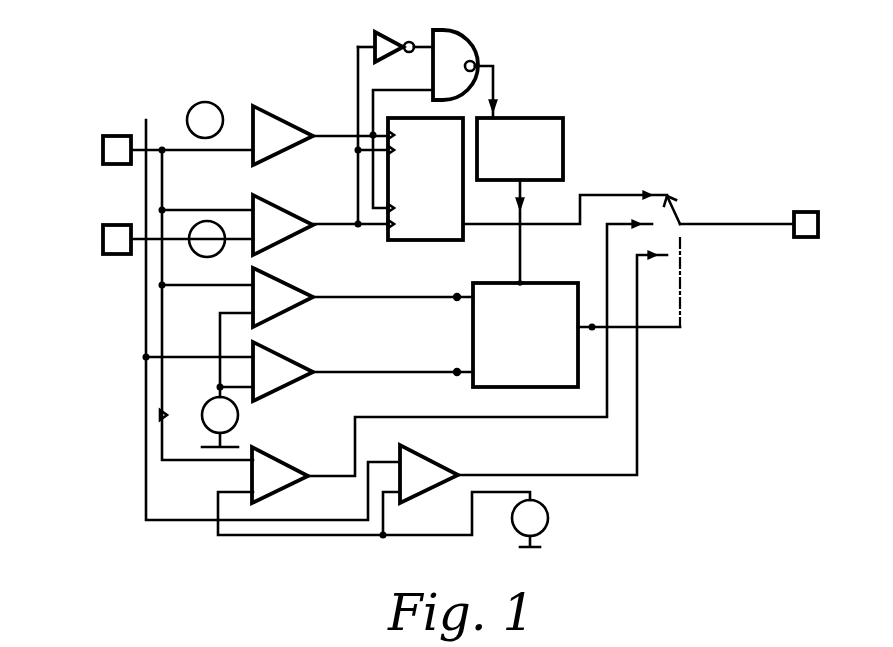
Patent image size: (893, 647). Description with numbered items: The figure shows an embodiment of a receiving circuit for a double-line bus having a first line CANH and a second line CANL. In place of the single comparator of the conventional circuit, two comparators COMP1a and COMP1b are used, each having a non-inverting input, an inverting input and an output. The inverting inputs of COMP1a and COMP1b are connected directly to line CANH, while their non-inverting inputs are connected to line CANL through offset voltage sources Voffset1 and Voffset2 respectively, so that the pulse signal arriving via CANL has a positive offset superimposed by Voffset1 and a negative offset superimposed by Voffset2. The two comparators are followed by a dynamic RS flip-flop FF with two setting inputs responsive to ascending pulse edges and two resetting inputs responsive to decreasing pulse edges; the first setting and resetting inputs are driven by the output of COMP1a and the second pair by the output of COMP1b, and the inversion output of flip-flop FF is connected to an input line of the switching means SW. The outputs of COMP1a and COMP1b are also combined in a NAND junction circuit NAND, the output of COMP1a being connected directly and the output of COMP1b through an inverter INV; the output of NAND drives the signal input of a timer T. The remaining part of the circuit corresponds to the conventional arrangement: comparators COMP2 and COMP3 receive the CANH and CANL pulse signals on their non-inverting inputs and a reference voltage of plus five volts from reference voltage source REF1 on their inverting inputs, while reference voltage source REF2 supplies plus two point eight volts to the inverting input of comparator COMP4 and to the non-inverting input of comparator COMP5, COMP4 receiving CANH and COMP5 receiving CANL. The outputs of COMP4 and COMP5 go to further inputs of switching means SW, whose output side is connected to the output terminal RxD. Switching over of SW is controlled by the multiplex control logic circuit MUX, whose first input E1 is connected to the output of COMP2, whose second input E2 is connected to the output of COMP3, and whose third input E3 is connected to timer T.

The first line CANH is at (101, 134).
The second line CANL is at (101, 225).
The offset voltage source Voffset1 is at (218, 106).
The offset voltage source Voffset2 is at (205, 247).
The comparator COMP1a is at (320, 126).
The comparator COMP1b is at (320, 216).
The comparator COMP2 is at (363, 295).
The comparator COMP3 is at (363, 369).
The comparator COMP4 is at (452, 363).
The comparator COMP5 is at (533, 379).
The reference voltage source REF1 is at (230, 416).
The reference voltage source REF2 is at (552, 517).
The inverter INV is at (395, 115).
The NAND junction circuit NAND is at (445, 118).
The dynamic RS flip-flop FF is at (512, 179).
The timer T is at (520, 200).
The multiplex control logic circuit MUX is at (576, 335).
The first input E1 is at (445, 285).
The second input E2 is at (445, 360).
The third input E3 is at (534, 270).
The switching means SW is at (677, 259).
The output terminal RxD is at (749, 244).